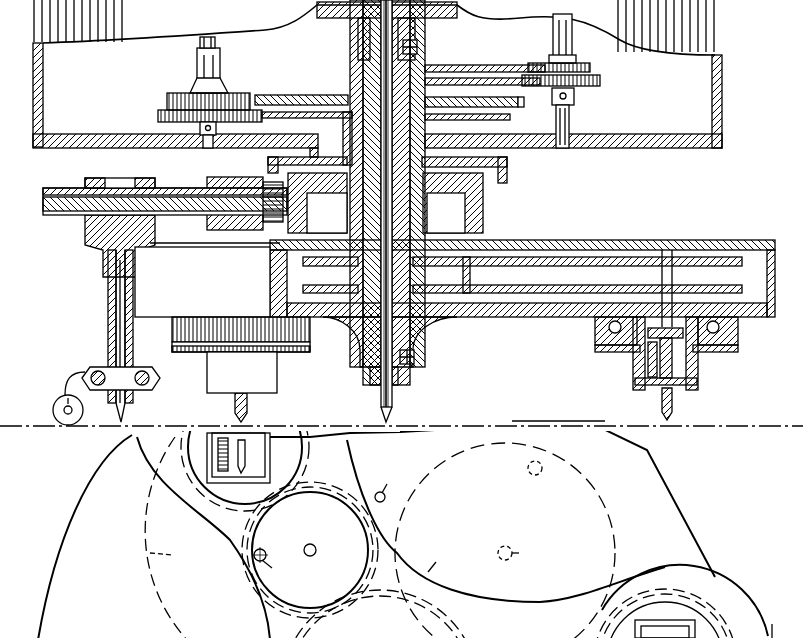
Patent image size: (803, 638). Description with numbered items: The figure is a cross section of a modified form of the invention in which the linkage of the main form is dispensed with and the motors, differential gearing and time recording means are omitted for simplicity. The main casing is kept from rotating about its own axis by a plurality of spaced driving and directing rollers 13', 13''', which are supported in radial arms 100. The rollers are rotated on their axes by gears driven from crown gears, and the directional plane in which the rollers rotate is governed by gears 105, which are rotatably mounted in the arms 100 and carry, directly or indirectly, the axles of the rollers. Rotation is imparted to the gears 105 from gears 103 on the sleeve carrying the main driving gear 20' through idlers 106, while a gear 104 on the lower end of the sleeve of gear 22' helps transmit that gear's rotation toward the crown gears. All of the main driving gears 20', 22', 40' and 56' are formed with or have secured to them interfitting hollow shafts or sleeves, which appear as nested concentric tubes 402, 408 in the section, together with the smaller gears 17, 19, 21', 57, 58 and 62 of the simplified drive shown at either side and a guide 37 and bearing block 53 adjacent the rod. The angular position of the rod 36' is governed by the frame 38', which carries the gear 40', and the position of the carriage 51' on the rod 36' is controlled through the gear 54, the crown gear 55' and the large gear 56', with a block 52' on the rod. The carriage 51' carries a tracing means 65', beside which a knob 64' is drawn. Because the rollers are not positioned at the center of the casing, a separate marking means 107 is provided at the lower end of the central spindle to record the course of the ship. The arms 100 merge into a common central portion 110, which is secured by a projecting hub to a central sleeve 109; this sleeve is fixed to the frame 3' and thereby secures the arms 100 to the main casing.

The frame 3' is at (424, 34).
The shaft 17 is at (569, 118).
The gear 19 is at (590, 68).
The main driving gear 20' is at (485, 60).
The gear 21' is at (578, 85).
The gear 22' is at (487, 100).
The rod 36' is at (165, 190).
The guide 37 is at (215, 241).
The frame 38' is at (469, 203).
The main driving gear 40' is at (303, 103).
The carriage 51' is at (120, 173).
The gear block 52' is at (211, 195).
The bearing block 53 is at (168, 215).
The gear 54 is at (263, 184).
The crown gear 55' is at (480, 175).
The large gear 56' is at (485, 121).
The gear 57 is at (158, 117).
The shaft cap 58 is at (200, 42).
The gear 62 is at (167, 98).
The knob 64' is at (53, 398).
The tracing means 65' is at (133, 336).
The radial arms 100 is at (408, 420).
The gears 103 is at (310, 285).
The gear 104 is at (310, 262).
The gears 105 is at (738, 280).
The idlers 106 is at (492, 303).
The marking means 107 is at (392, 406).
The central sleeve 109 is at (372, 378).
The common central portion 110 is at (358, 328).
The tube 402 is at (577, 275).
The tube 408 is at (577, 280).
The driving and directing roller 13' is at (401, 319).
The driving and directing roller 13''' is at (259, 407).